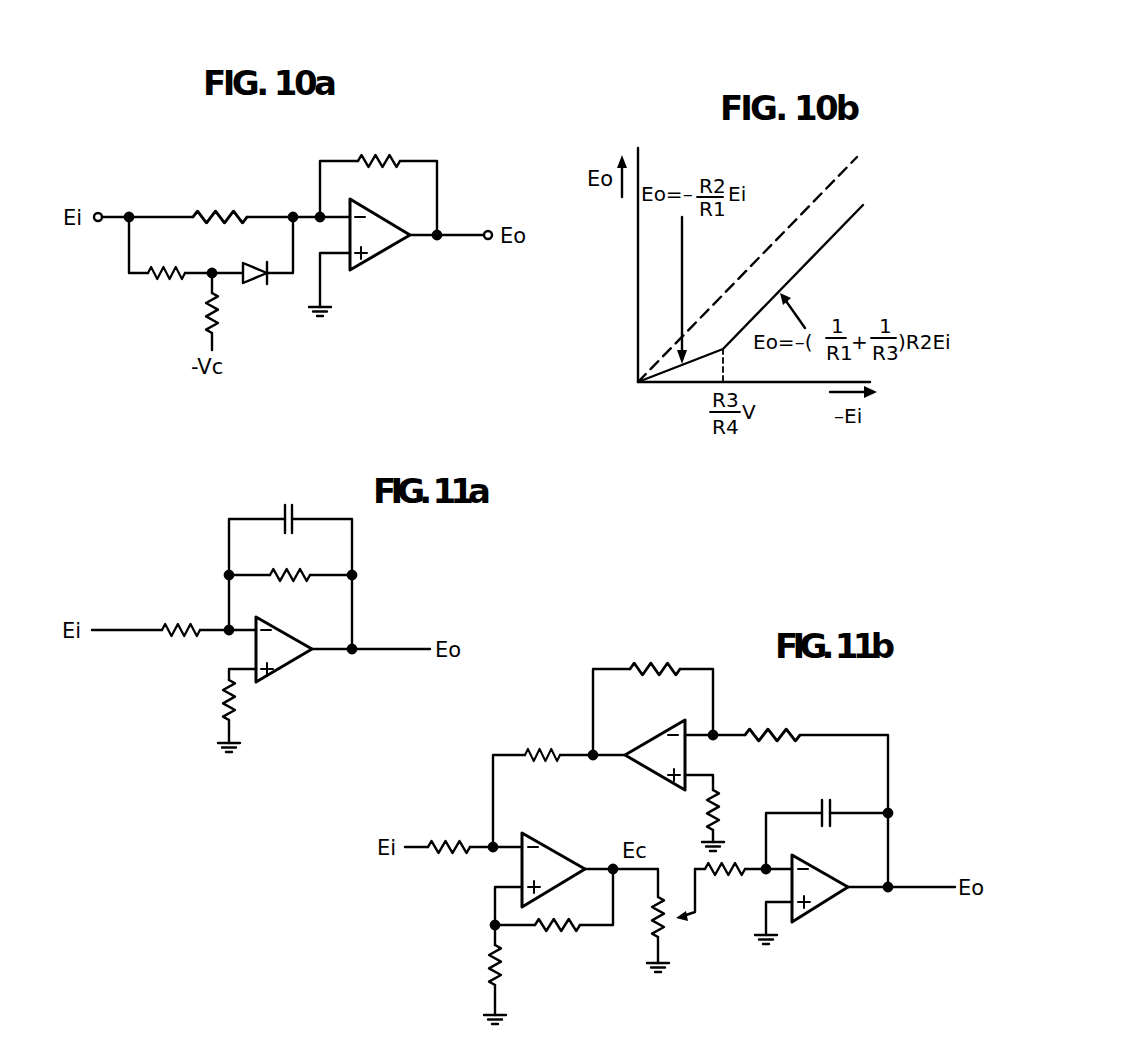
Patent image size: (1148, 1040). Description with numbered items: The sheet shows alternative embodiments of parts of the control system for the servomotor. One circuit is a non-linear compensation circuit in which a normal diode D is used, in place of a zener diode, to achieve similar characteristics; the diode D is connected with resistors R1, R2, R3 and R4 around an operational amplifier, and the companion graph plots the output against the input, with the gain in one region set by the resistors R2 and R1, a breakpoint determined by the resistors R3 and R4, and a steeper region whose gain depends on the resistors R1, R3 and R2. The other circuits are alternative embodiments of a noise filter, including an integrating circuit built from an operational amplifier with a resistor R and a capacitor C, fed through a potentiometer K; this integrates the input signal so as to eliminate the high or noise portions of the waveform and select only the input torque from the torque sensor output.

In FIG. 10a, the input resistor R1 is at (227, 211).
In FIG. 10a, the feedback resistor R2 is at (390, 154).
In FIG. 10a, the resistor in diode branch R3 is at (169, 267).
In FIG. 10a, the bias resistor to -Vc R4 is at (220, 320).
In FIG. 10a, the normal diode D is at (252, 262).
In FIG. 11b, the potentiometer (gain adjust) K is at (662, 906).
In FIG. 11b, the integrator input resistor R is at (722, 875).
In FIG. 11b, the integrator capacitor C is at (829, 821).